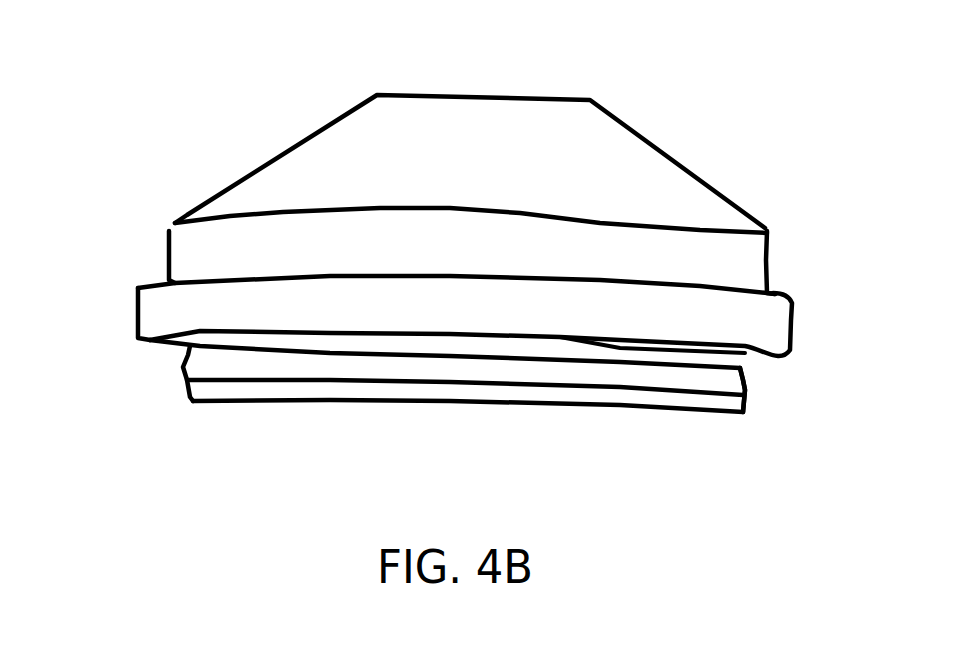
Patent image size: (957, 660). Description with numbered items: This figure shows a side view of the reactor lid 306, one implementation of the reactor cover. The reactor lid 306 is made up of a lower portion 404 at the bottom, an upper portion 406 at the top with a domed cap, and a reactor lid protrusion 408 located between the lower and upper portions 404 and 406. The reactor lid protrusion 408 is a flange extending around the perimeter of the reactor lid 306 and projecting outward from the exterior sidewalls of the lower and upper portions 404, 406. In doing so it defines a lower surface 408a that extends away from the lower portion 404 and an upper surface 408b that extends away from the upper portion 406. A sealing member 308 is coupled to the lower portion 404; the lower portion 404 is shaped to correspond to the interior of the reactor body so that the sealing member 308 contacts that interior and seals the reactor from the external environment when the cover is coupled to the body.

The reactor lid 306 is at (665, 151).
The sealing member 308 is at (750, 388).
The lower portion 404 is at (102, 347).
The upper portion 406 is at (102, 215).
The reactor lid protrusion 408 is at (800, 328).
The lower surface 408a is at (752, 353).
The upper surface 408b is at (778, 290).